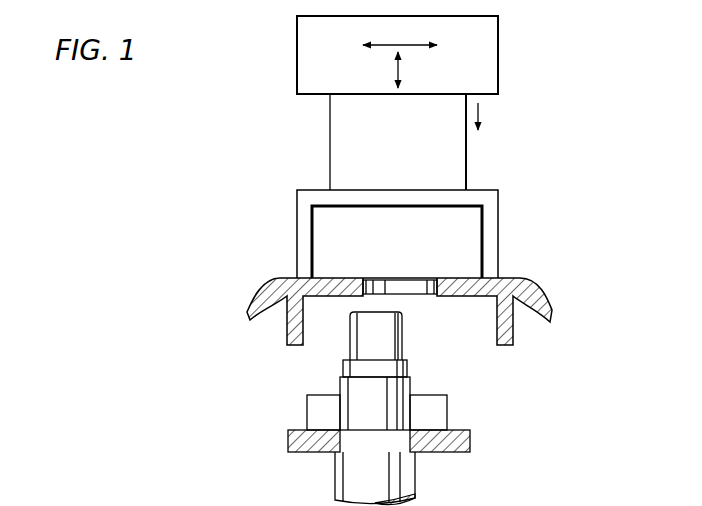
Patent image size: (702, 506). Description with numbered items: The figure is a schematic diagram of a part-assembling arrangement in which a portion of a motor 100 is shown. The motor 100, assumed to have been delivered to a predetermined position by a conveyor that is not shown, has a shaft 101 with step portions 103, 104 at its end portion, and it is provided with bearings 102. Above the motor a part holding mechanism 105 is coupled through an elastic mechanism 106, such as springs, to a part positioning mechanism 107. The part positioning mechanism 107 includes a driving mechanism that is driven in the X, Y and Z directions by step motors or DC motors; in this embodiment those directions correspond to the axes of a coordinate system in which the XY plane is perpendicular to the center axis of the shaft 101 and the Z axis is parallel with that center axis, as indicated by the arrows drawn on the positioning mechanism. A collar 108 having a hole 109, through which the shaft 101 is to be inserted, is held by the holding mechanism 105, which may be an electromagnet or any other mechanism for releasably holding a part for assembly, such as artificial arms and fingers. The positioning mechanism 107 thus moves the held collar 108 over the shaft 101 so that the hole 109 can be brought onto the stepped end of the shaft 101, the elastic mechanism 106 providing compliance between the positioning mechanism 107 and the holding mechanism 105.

The motor 100 is at (488, 491).
The shaft 101 is at (340, 390).
The bearings 102 is at (307, 412).
The step portion 103 is at (402, 357).
The step portion 104 is at (408, 374).
The part holding mechanism 105 is at (497, 208).
The elastic mechanism 106 is at (330, 158).
The part positioning mechanism 107 is at (307, 48).
The collar 108 is at (525, 285).
The hole 109 is at (410, 283).